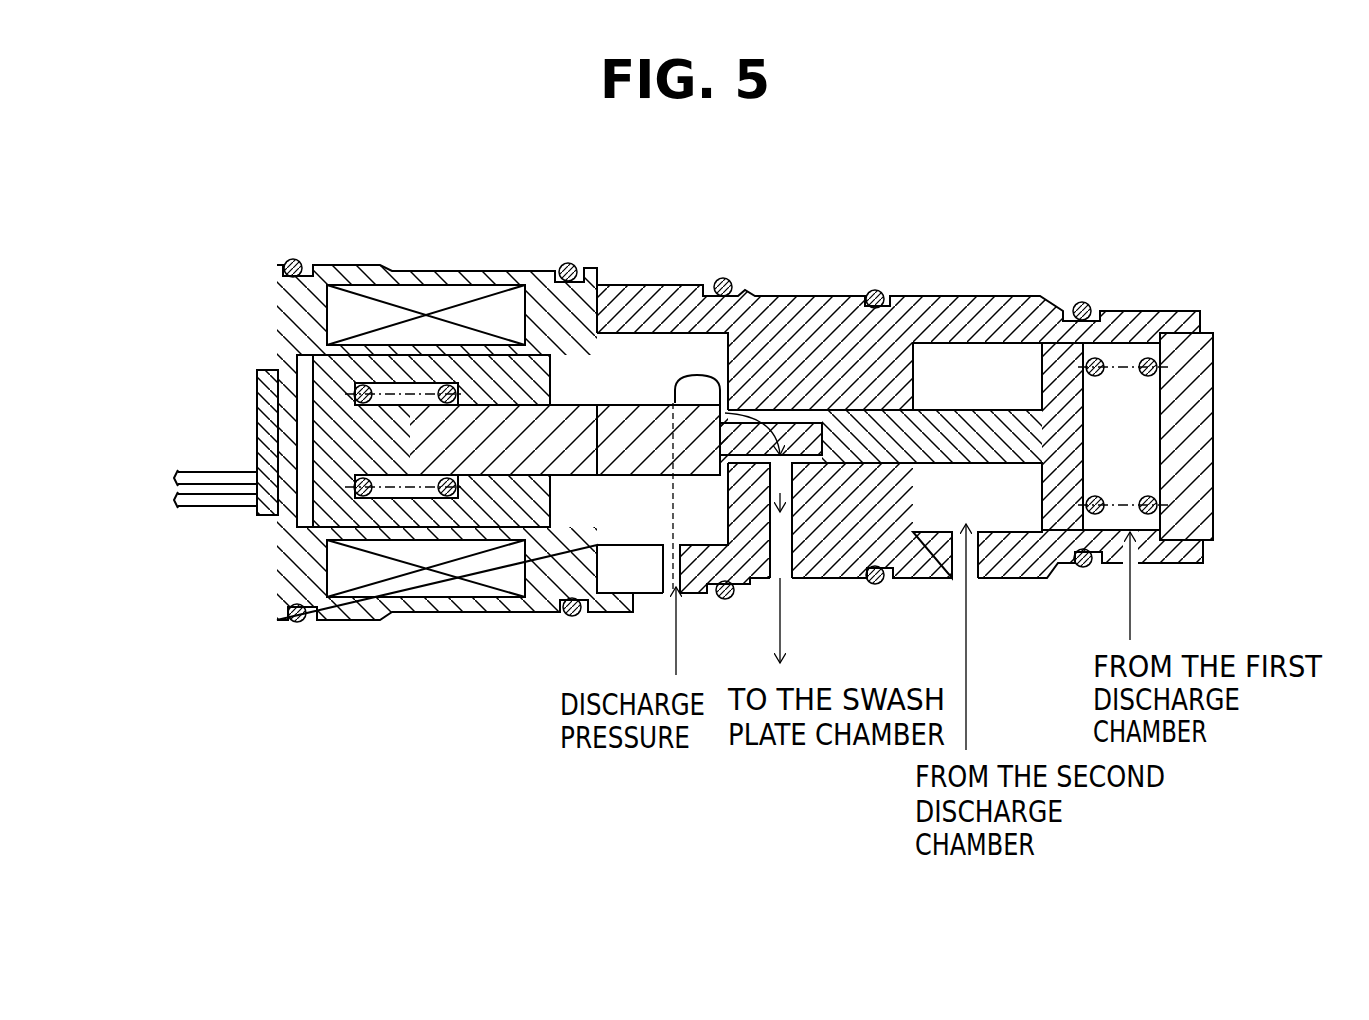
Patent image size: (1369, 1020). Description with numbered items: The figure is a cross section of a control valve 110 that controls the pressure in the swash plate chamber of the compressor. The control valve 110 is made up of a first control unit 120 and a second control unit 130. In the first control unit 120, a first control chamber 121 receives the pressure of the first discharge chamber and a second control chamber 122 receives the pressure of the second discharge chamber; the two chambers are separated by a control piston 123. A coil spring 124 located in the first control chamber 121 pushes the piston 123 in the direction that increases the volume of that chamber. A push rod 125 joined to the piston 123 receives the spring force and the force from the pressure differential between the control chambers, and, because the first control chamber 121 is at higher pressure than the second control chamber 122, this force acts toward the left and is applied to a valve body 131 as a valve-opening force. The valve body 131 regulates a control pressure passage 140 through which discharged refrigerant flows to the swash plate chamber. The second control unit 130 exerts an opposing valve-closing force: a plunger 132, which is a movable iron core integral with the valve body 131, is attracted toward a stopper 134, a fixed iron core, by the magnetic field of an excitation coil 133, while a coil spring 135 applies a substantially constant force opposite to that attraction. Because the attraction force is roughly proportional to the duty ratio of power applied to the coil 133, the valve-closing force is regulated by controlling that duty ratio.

The control valve 110 is at (739, 271).
The first control unit 120 is at (936, 290).
The first control chamber 121 is at (1130, 425).
The second control chamber 122 is at (1010, 512).
The control piston 123 is at (1060, 358).
The coil spring 124 is at (1152, 310).
The push rod 125 is at (992, 437).
The second control unit 130 is at (519, 263).
The valve body 131 is at (657, 400).
The plunger 132 is at (332, 375).
The excitation coil 133 is at (442, 300).
The stopper 134 is at (540, 517).
The coil spring 135 is at (366, 385).
The control pressure passage 140 is at (670, 575).